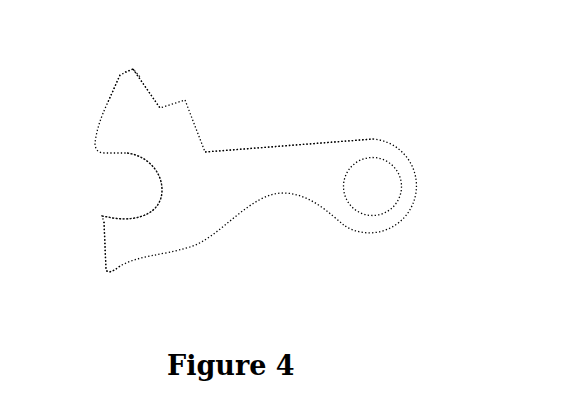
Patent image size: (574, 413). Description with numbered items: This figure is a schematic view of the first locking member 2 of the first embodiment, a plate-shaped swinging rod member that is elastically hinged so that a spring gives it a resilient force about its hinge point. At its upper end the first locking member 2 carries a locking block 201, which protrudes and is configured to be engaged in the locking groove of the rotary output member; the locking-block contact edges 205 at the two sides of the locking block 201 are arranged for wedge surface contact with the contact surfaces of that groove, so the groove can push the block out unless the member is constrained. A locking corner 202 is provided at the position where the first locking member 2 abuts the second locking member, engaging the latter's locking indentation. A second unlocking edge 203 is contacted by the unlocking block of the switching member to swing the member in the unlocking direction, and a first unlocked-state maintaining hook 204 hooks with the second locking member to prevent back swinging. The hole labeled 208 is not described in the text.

The first locking member 2 is at (227, 195).
The locking block 201 is at (125, 68).
The locking corner 202 is at (108, 273).
The second unlocking edge 203 is at (268, 148).
The first unlocked-state maintaining hook 204 is at (112, 218).
The locking-block contact edges 205 is at (108, 102).
The mounting hole 208 is at (370, 187).